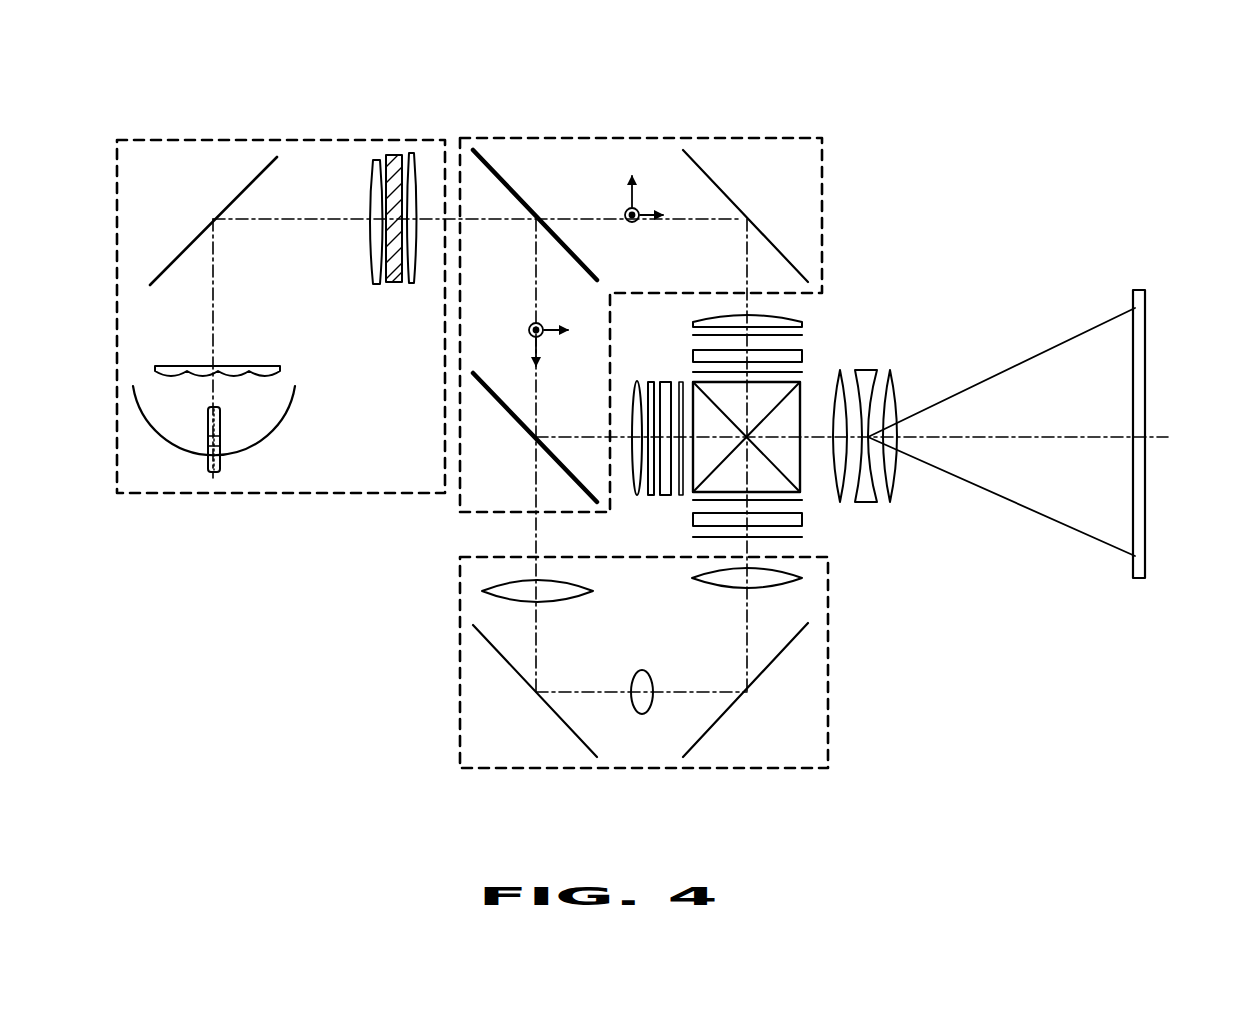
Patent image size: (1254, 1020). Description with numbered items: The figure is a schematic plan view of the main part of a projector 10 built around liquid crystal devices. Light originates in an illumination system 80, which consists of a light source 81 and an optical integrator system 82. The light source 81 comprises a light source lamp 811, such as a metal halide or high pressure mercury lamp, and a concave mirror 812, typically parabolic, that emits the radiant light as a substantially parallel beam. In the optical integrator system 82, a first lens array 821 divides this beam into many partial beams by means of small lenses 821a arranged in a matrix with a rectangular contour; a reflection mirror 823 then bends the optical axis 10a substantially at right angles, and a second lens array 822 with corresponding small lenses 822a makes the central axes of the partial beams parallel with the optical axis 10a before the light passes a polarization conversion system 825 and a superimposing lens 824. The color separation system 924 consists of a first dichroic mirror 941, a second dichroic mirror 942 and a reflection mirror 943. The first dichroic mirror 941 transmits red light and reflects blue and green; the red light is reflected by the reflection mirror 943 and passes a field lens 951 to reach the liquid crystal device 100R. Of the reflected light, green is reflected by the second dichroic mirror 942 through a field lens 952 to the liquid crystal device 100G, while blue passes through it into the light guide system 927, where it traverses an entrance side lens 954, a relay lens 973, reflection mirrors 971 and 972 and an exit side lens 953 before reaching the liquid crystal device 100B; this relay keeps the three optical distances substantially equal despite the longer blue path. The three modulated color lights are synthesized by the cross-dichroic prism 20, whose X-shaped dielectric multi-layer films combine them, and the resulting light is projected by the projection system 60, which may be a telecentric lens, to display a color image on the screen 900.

The projector 10 is at (192, 57).
The optical axis 10a is at (215, 300).
The illumination system 80 is at (183, 496).
The light source 81 is at (278, 430).
The light source lamp 811 is at (222, 440).
The concave mirror 812 is at (284, 424).
The optical integrator system 82 is at (287, 255).
The first lens array 821 is at (284, 373).
The small lenses 821a is at (198, 375).
The second lens array 822 is at (376, 287).
The small lenses 822a is at (372, 171).
The reflection mirror 823 is at (170, 268).
The superimposing lens 824 is at (413, 284).
The polarization conversion system 825 is at (393, 284).
The color separation system 924 is at (526, 138).
The first dichroic mirror 941 is at (512, 190).
The second dichroic mirror 942 is at (497, 400).
The reflection mirror 943 is at (716, 184).
The light guide system 927 is at (458, 585).
The field lens 951 is at (790, 318).
The field lens 952 is at (665, 342).
The exit side lens 953 is at (695, 581).
The entrance side lens 954 is at (594, 589).
The reflection mirror 971 is at (511, 668).
The reflection mirror 972 is at (771, 665).
The relay lens 973 is at (632, 671).
The liquid crystal device 100G is at (715, 342).
The liquid crystal device 100R is at (812, 346).
The liquid crystal device 100B is at (815, 524).
The cross-dichroic prism 20 is at (801, 387).
The projection system 60 is at (880, 360).
The screen 900 is at (1145, 300).